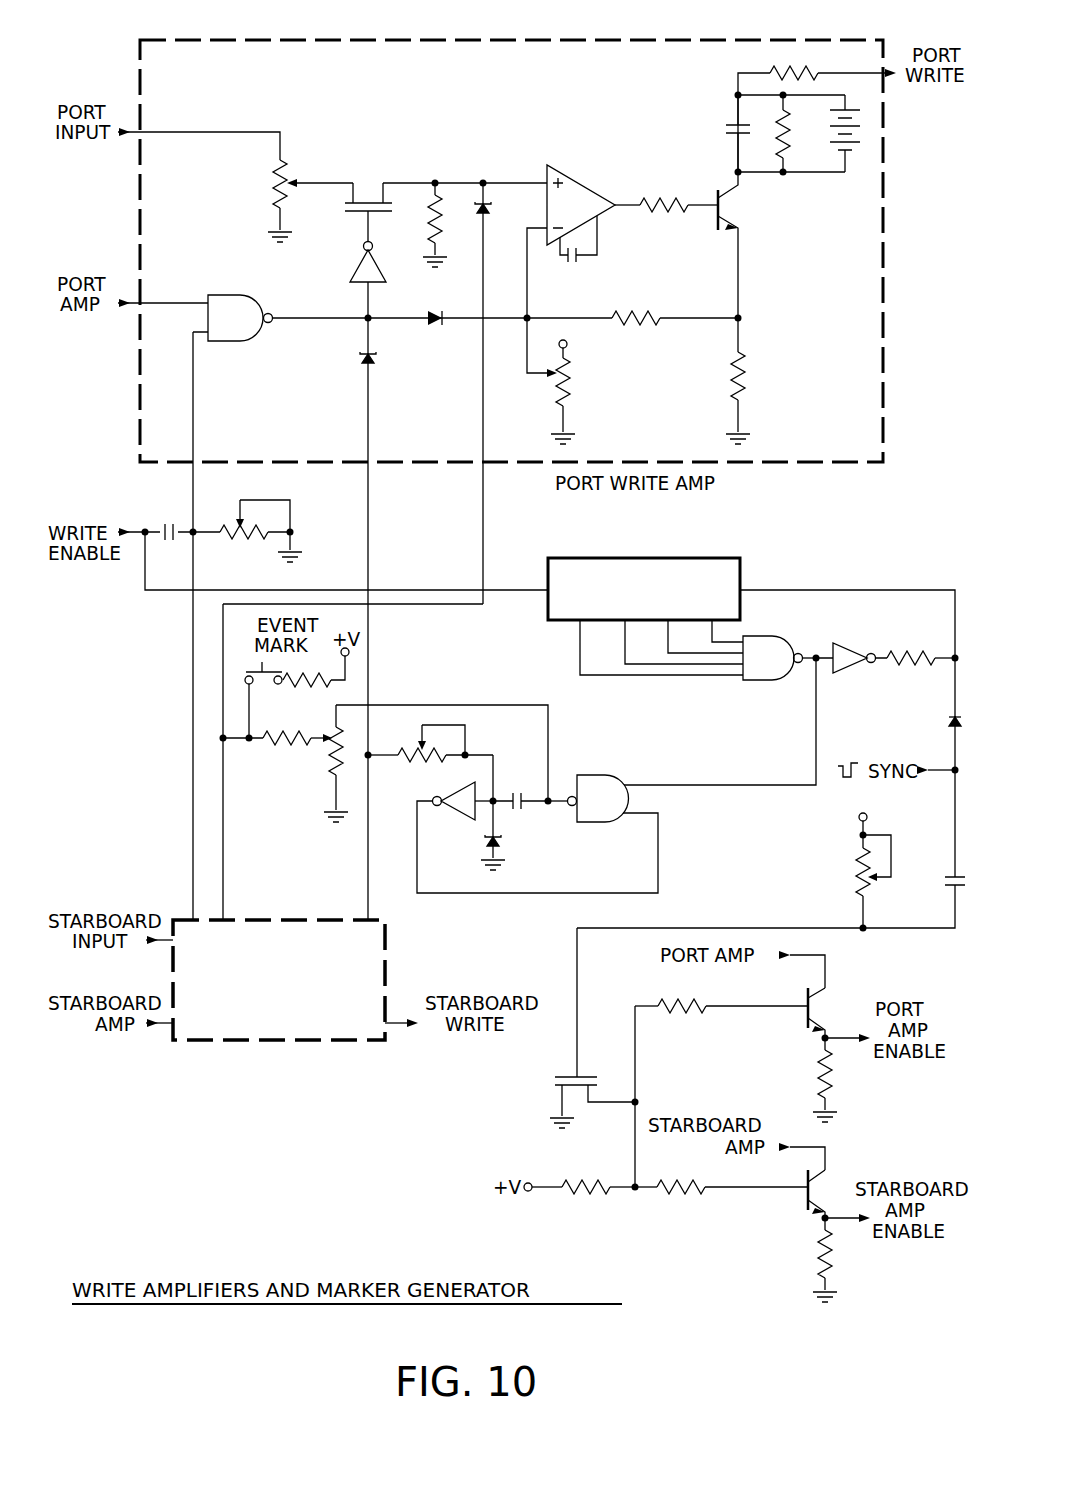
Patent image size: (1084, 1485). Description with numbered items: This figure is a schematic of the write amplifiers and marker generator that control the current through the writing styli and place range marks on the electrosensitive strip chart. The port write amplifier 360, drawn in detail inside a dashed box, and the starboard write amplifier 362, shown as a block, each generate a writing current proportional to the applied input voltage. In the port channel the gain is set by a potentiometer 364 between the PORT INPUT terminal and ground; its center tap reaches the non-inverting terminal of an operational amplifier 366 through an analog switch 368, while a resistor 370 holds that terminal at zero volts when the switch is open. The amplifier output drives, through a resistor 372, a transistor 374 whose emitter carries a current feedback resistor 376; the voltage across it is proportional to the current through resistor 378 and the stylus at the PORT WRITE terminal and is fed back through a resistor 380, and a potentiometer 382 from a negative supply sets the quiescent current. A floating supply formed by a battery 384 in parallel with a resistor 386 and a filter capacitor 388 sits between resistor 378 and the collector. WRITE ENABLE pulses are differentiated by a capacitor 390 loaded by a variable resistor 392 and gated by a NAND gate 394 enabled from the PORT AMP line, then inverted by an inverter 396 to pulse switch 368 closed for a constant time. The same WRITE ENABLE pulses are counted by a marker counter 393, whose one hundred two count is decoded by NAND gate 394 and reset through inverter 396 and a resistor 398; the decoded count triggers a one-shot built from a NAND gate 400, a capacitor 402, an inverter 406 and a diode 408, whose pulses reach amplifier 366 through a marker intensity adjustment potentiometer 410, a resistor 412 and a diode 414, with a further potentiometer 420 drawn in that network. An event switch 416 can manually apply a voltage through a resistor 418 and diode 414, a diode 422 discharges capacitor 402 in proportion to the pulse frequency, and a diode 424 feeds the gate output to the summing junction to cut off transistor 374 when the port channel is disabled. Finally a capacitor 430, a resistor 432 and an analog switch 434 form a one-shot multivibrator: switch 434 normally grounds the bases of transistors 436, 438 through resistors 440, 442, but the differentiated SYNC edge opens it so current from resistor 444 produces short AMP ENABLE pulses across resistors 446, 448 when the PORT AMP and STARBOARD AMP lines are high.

The port write amplifier 360 is at (883, 372).
The starboard write amplifier 362 is at (385, 965).
The potentiometer 364 is at (265, 183).
The operational amplifier 366 is at (588, 190).
The analog switch 368 is at (345, 213).
The resistor 370 is at (428, 218).
The resistor 372 is at (660, 212).
The transistor 374 is at (712, 200).
The current feedback resistor 376 is at (745, 372).
The resistor 378 is at (768, 68).
The resistor 380 is at (640, 308).
The potentiometer 382 is at (552, 380).
The battery 384 is at (858, 150).
The resistor 386 is at (790, 135).
The filter capacitor 388 is at (728, 128).
The capacitor 390 is at (166, 520).
The variable resistor 392 is at (236, 542).
The marker counter 393 is at (742, 566).
The NAND gate 394 is at (240, 341).
The inverter 396 is at (349, 268).
The resistor 398 is at (912, 650).
The NAND gate 400 is at (608, 773).
The capacitor 402 is at (522, 792).
The inverter 406 is at (462, 812).
The diode 408 is at (500, 842).
The marker intensity adjustment potentiometer 410 is at (330, 760).
The resistor 412 is at (276, 745).
The diode 414 is at (488, 200).
The event switch 416 is at (268, 668).
The resistor 418 is at (298, 688).
The potentiometer 420 is at (412, 765).
The diode 422 is at (360, 352).
The diode 424 is at (438, 326).
The capacitor 430 is at (945, 882).
The resistor 432 is at (856, 870).
The analog switch 434 is at (548, 1070).
The transistor 436 is at (800, 1012).
The transistor 438 is at (800, 1195).
The resistor 440 is at (680, 1014).
The resistor 442 is at (672, 1196).
The resistor 444 is at (575, 1196).
The resistor 446 is at (818, 1072).
The resistor 448 is at (818, 1258).